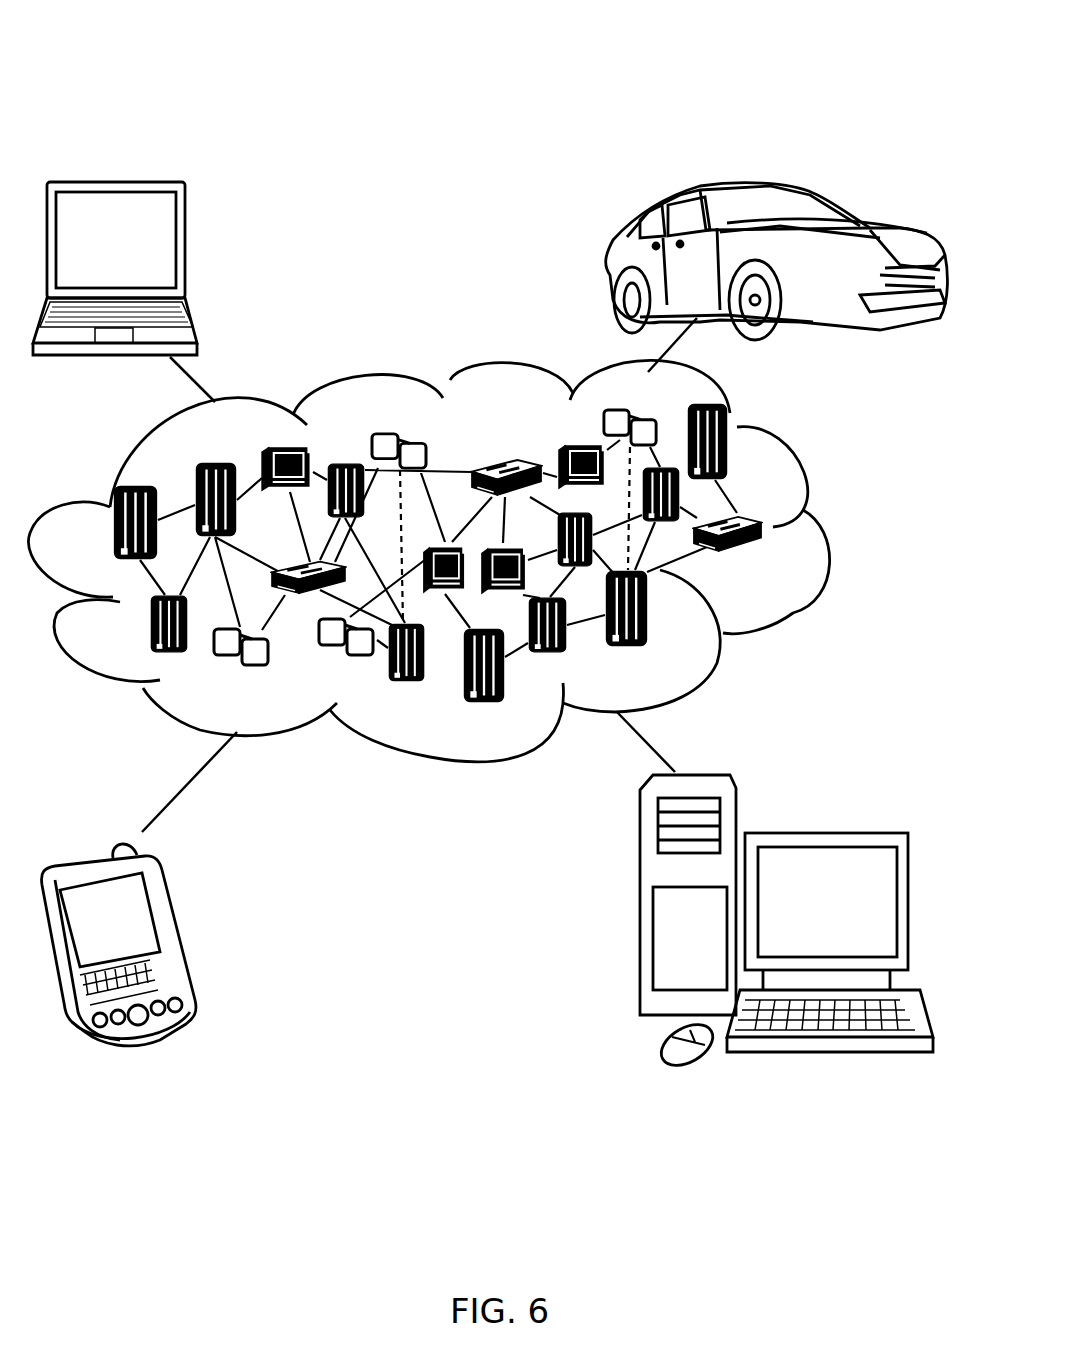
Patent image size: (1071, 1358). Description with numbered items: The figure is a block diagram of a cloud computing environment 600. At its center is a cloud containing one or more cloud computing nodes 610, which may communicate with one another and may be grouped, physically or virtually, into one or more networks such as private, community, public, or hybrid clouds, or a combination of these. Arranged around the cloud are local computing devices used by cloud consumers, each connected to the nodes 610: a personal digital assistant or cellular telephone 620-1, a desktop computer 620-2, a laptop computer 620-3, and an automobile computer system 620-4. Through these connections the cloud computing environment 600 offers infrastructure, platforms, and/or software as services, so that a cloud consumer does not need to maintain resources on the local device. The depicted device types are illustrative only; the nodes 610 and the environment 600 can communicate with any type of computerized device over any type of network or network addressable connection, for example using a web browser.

The cloud computing environment 600 is at (767, 42).
The cloud computing nodes 610 is at (457, 560).
The personal digital assistant (PDA) or cellular telephone 620-1 is at (177, 933).
The desktop computer 620-2 is at (828, 814).
The laptop computer 620-3 is at (185, 246).
The automobile computer system 620-4 is at (583, 249).